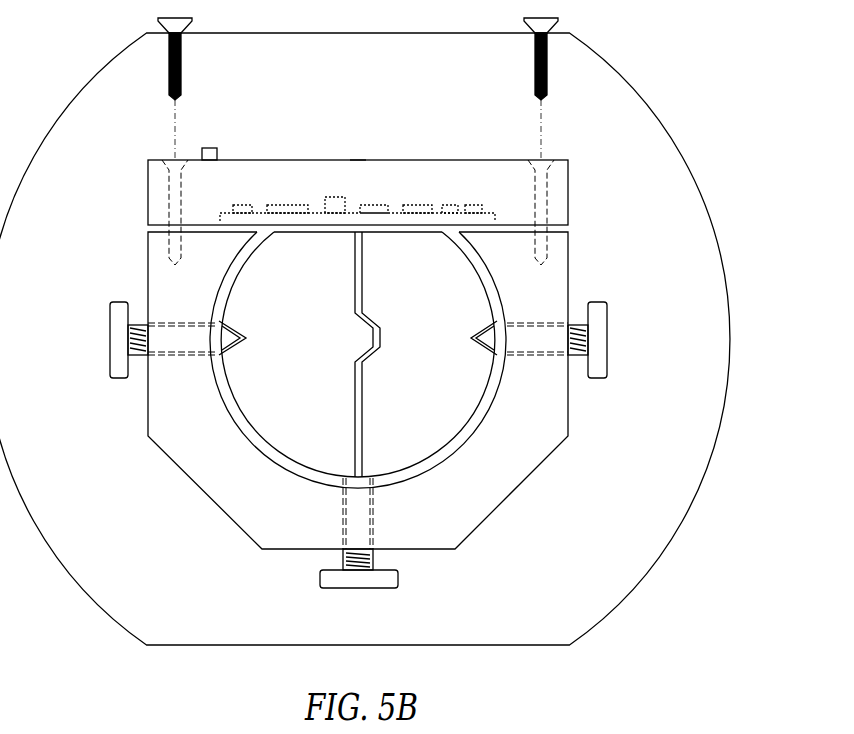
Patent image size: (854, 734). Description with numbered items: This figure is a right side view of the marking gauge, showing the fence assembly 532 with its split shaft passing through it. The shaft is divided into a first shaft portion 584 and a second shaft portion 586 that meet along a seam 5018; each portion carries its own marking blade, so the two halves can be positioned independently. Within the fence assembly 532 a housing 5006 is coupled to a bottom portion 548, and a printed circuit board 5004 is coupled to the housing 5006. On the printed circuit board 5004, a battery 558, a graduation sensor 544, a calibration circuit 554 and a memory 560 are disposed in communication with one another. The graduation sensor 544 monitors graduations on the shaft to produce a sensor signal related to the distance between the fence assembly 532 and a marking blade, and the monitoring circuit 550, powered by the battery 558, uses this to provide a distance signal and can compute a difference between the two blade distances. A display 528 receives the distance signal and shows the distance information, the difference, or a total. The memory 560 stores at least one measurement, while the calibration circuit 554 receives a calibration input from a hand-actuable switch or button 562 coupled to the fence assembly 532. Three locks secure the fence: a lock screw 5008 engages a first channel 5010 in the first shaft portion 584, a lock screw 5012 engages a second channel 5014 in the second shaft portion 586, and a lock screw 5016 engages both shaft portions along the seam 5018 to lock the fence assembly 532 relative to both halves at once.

The fence assembly 532 is at (672, 141).
The housing 5006 is at (568, 192).
The bottom portion 548 is at (569, 412).
The display 528 is at (358, 160).
The hand-actuable switch or button 562 is at (209, 147).
The printed circuit board 5004 is at (226, 213).
The battery 558 is at (288, 205).
The monitoring circuit 550 is at (332, 197).
The graduation sensor 544 is at (376, 205).
The calibration circuit 554 is at (419, 205).
The memory 560 is at (474, 205).
The first shaft portion 584 is at (312, 288).
The second shaft portion 586 is at (440, 290).
The seam 5018 is at (363, 421).
The lock screw 5008 is at (108, 339).
The first channel 5010 is at (238, 357).
The lock screw 5012 is at (609, 341).
The second channel 5014 is at (484, 351).
The lock screw 5016 is at (359, 591).